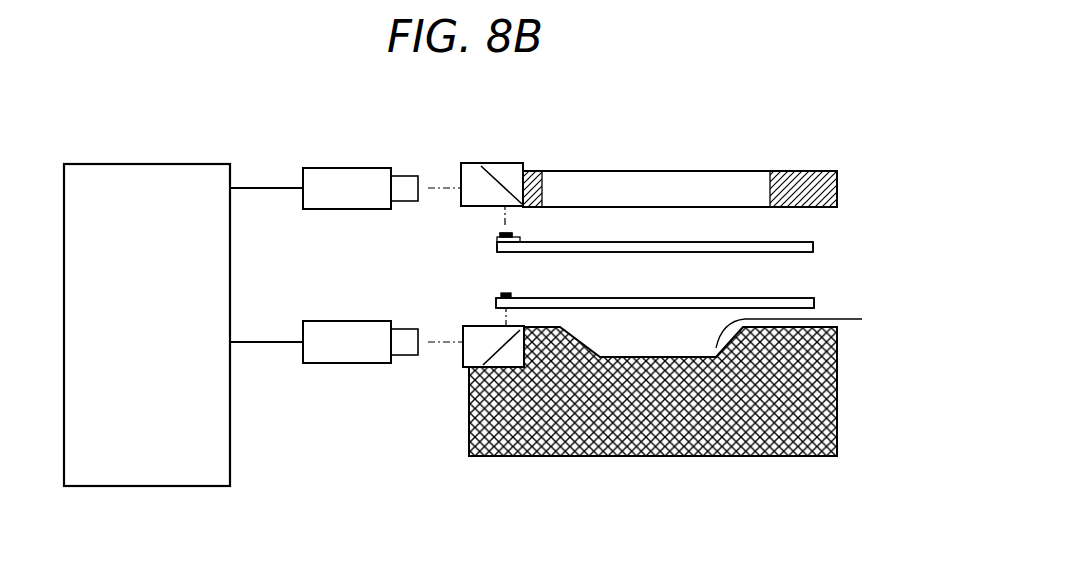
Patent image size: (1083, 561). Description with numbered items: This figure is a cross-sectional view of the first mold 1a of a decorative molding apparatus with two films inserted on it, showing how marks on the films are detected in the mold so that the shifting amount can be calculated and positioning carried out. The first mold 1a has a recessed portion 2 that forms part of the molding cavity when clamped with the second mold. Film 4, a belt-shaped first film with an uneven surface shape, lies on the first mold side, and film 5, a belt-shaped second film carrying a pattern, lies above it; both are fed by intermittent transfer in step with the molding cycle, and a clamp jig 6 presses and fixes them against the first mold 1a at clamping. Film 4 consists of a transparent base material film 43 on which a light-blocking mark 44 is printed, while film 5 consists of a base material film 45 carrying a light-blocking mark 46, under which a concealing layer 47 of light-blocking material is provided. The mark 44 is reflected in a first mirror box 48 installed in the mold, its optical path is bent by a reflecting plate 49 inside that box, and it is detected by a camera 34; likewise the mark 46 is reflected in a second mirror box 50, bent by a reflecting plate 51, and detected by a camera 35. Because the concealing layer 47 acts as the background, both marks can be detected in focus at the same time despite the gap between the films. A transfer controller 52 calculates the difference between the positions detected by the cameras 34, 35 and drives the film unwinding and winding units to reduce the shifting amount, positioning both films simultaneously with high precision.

The transfer controller 52 is at (147, 172).
The camera 35 is at (347, 178).
The camera 34 is at (347, 350).
The second mirror box 50 is at (484, 147).
The reflecting plate 51 is at (497, 182).
The clamp jig 6 is at (808, 172).
The film (second film) 5 is at (618, 243).
The film (first film) 4 is at (672, 298).
The concealing layer 47 is at (518, 237).
The mark (second mark) 46 is at (500, 233).
The base material film 45 is at (813, 245).
The mark (first mark) 44 is at (501, 294).
The base material film 43 is at (814, 302).
The recessed portion 2 is at (798, 329).
The first mold 1a is at (525, 443).
The first mirror box 48 is at (455, 375).
The reflecting plate 49 is at (503, 355).